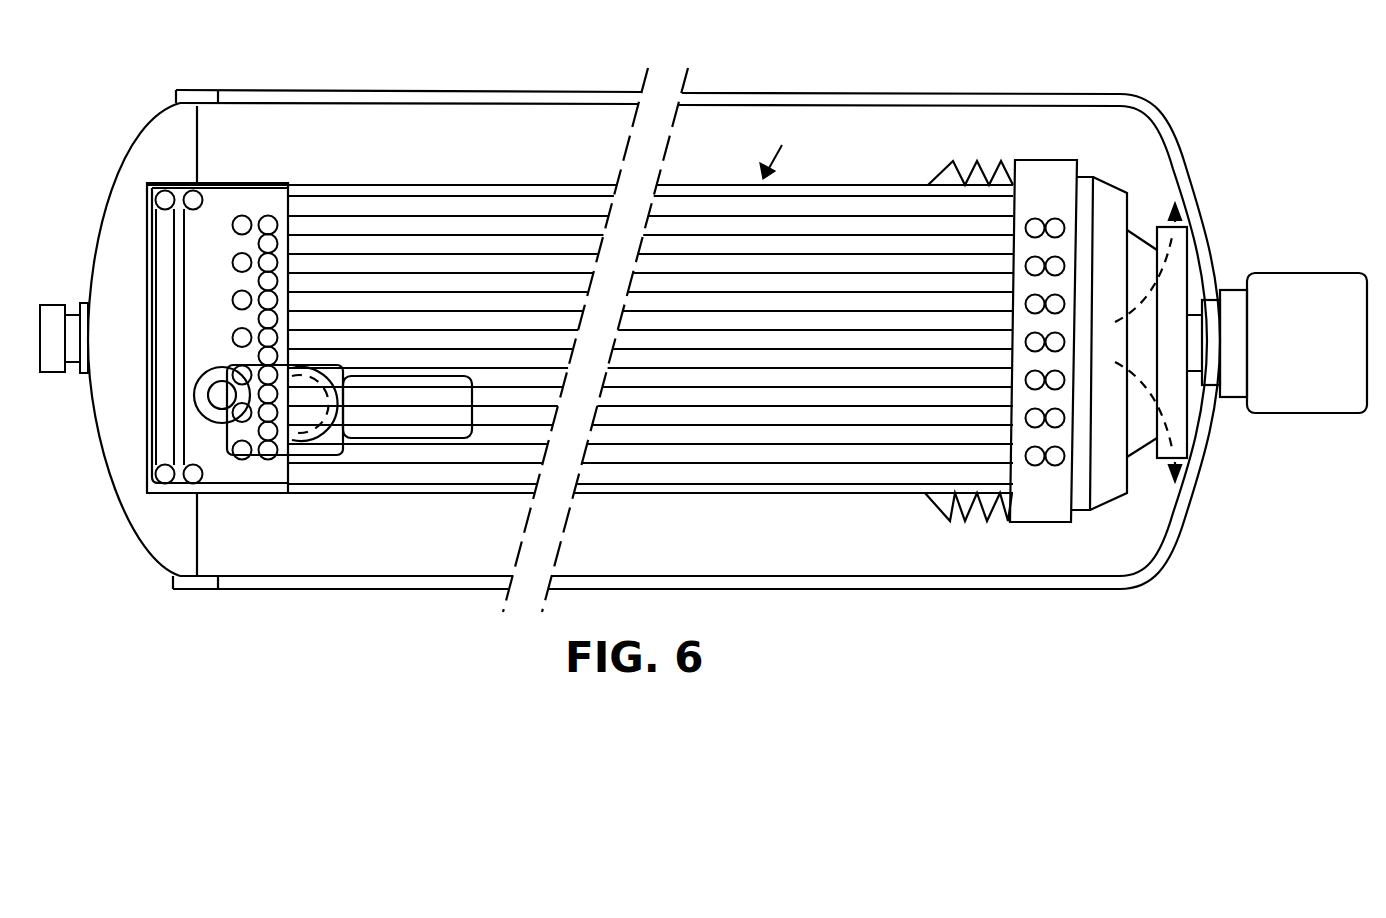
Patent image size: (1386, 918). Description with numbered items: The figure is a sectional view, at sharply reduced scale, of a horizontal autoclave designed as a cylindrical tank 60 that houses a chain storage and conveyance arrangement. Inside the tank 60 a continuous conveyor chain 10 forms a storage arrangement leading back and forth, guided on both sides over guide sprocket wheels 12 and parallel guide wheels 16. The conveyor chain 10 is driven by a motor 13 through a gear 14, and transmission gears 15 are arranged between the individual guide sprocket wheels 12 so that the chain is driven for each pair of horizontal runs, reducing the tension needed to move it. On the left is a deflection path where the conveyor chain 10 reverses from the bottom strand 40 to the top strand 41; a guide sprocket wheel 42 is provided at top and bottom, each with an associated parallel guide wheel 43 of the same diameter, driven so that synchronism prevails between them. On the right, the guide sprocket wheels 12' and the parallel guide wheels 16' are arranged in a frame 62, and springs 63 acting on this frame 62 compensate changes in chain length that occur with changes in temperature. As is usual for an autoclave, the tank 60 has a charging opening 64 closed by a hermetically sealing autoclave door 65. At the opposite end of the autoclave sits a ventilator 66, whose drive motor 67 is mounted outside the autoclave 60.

The conveyor chain 10 is at (463, 210).
The guide sprocket wheels 12 is at (280, 305).
The guide sprocket wheels 12' is at (1038, 319).
The motor 13 is at (405, 432).
The gear 14 is at (288, 418).
The transmission gears 15 is at (259, 247).
The parallel guide wheel 16 is at (255, 291).
The parallel guide wheels 16' is at (1073, 292).
The bottom strand 40 is at (730, 488).
The top strand 41 is at (578, 185).
The guide sprocket wheel 42 is at (197, 192).
The parallel guide wheel 43 is at (168, 190).
The cylindrical tank 60 is at (316, 92).
The frame 62 is at (1055, 513).
The springs 63 is at (982, 167).
The charging opening 64 is at (784, 158).
The autoclave door 65 is at (128, 205).
The ventilator 66 is at (1160, 232).
The drive motor 67 is at (1292, 286).